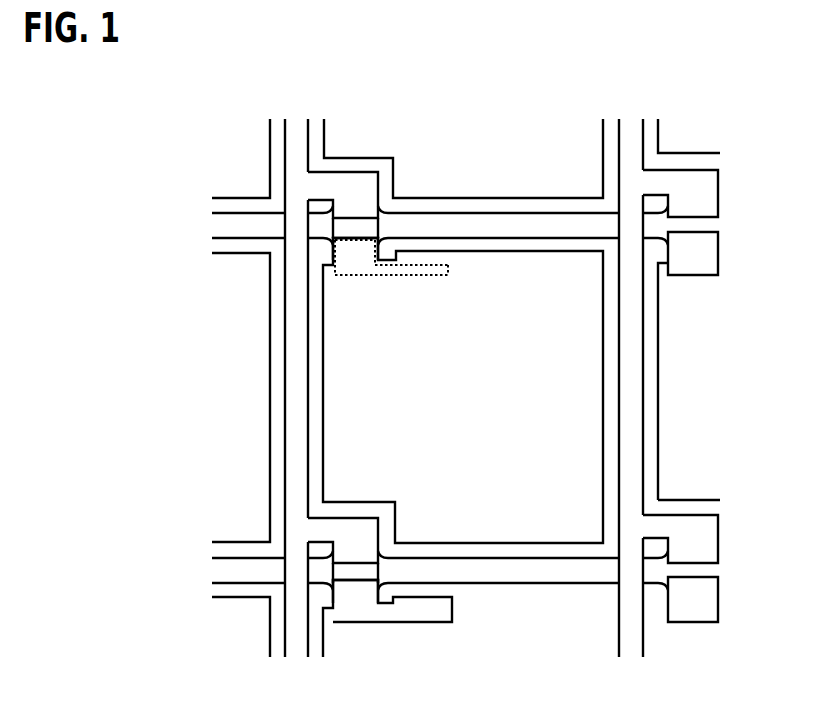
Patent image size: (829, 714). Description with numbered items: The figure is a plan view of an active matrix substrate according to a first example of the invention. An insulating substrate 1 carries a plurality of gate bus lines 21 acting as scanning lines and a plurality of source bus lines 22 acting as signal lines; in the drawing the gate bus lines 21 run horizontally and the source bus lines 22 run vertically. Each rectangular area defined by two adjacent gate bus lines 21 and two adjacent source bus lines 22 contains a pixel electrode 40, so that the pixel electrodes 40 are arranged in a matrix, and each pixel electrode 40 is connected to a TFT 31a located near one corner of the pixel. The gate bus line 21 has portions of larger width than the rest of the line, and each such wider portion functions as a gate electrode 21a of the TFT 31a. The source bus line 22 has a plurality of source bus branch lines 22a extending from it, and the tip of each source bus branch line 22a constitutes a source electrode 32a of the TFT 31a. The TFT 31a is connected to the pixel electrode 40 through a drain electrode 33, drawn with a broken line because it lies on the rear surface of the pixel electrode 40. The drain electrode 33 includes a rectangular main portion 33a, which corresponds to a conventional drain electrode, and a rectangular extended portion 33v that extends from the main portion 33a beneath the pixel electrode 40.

The insulating substrate 1 is at (662, 158).
The gate bus line 21 is at (514, 226).
The gate electrode 21a is at (376, 229).
The source bus line 22 is at (295, 143).
The source bus branch line 22a is at (349, 183).
The TFT 31a is at (345, 227).
The source electrode 32a is at (365, 209).
The drain electrode 33 is at (428, 278).
The rectangular main portion 33a is at (365, 253).
The extended portion 33v is at (448, 268).
The pixel electrode 40 is at (512, 458).